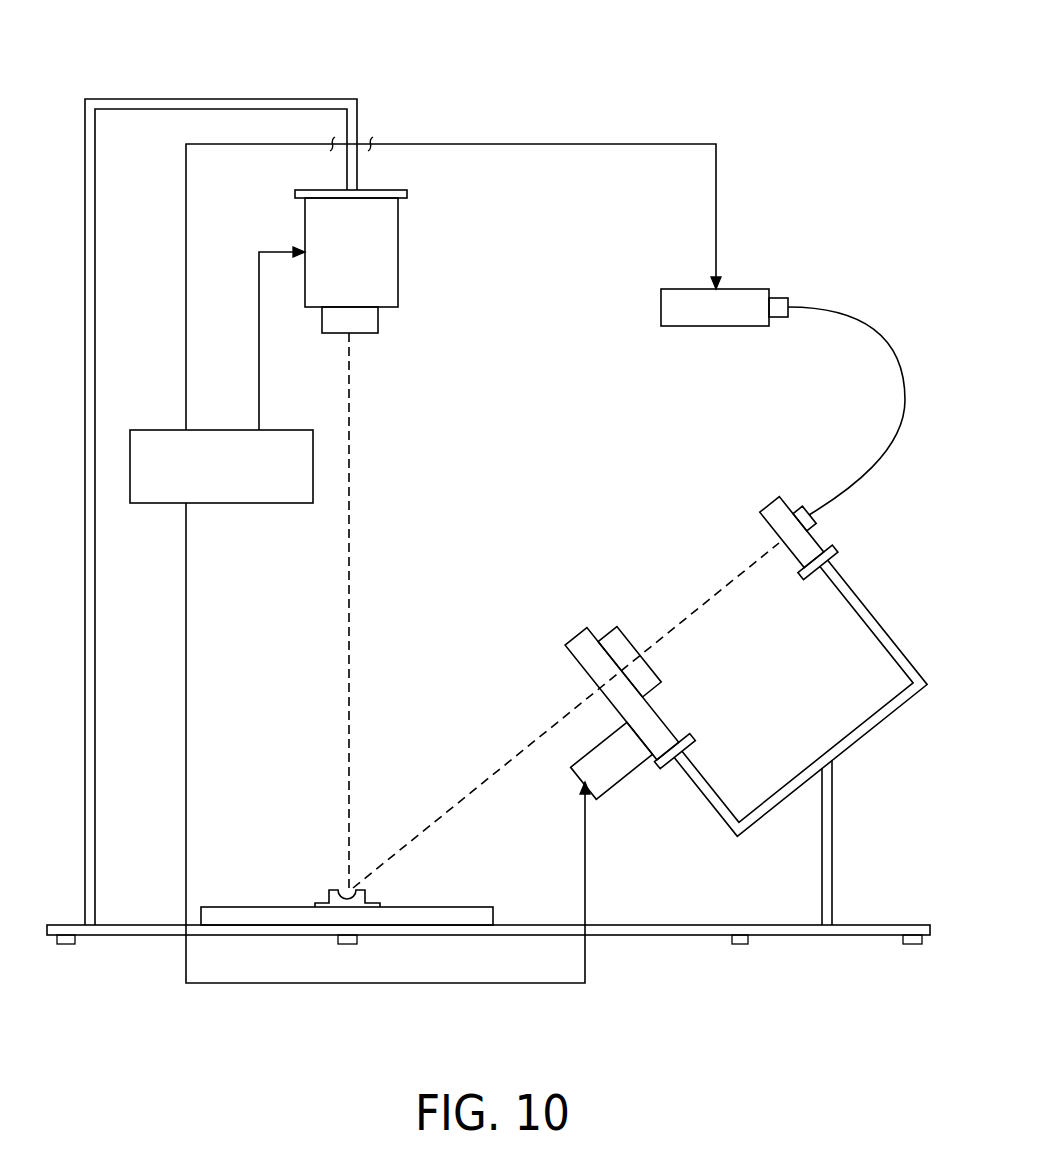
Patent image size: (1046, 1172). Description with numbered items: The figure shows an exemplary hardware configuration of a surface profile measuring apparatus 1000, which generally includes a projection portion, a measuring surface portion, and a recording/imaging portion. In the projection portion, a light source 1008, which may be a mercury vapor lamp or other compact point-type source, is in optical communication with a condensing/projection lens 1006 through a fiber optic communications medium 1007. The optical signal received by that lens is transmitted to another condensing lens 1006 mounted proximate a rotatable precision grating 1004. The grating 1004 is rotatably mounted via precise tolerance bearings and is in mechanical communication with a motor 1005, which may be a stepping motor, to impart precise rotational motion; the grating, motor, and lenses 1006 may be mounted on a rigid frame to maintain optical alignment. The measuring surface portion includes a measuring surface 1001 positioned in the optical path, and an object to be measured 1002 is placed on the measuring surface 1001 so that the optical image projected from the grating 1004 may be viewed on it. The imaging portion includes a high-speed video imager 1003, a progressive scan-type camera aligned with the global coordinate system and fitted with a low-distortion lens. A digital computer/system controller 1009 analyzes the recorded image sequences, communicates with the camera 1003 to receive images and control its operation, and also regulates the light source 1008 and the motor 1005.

The surface profile measuring apparatus 1000 is at (479, 104).
The measuring surface 1001 is at (253, 912).
The object to be measured 1002 is at (330, 890).
The high-speed video imager 1003 is at (380, 235).
The rotatable precision grating 1004 is at (657, 722).
The motor 1005 is at (625, 767).
The condensing/projection lens 1006 is at (772, 510).
The fiber optic communications medium 1007 is at (837, 310).
The light source 1008 is at (718, 312).
The digital computer/system controller 1009 is at (263, 493).